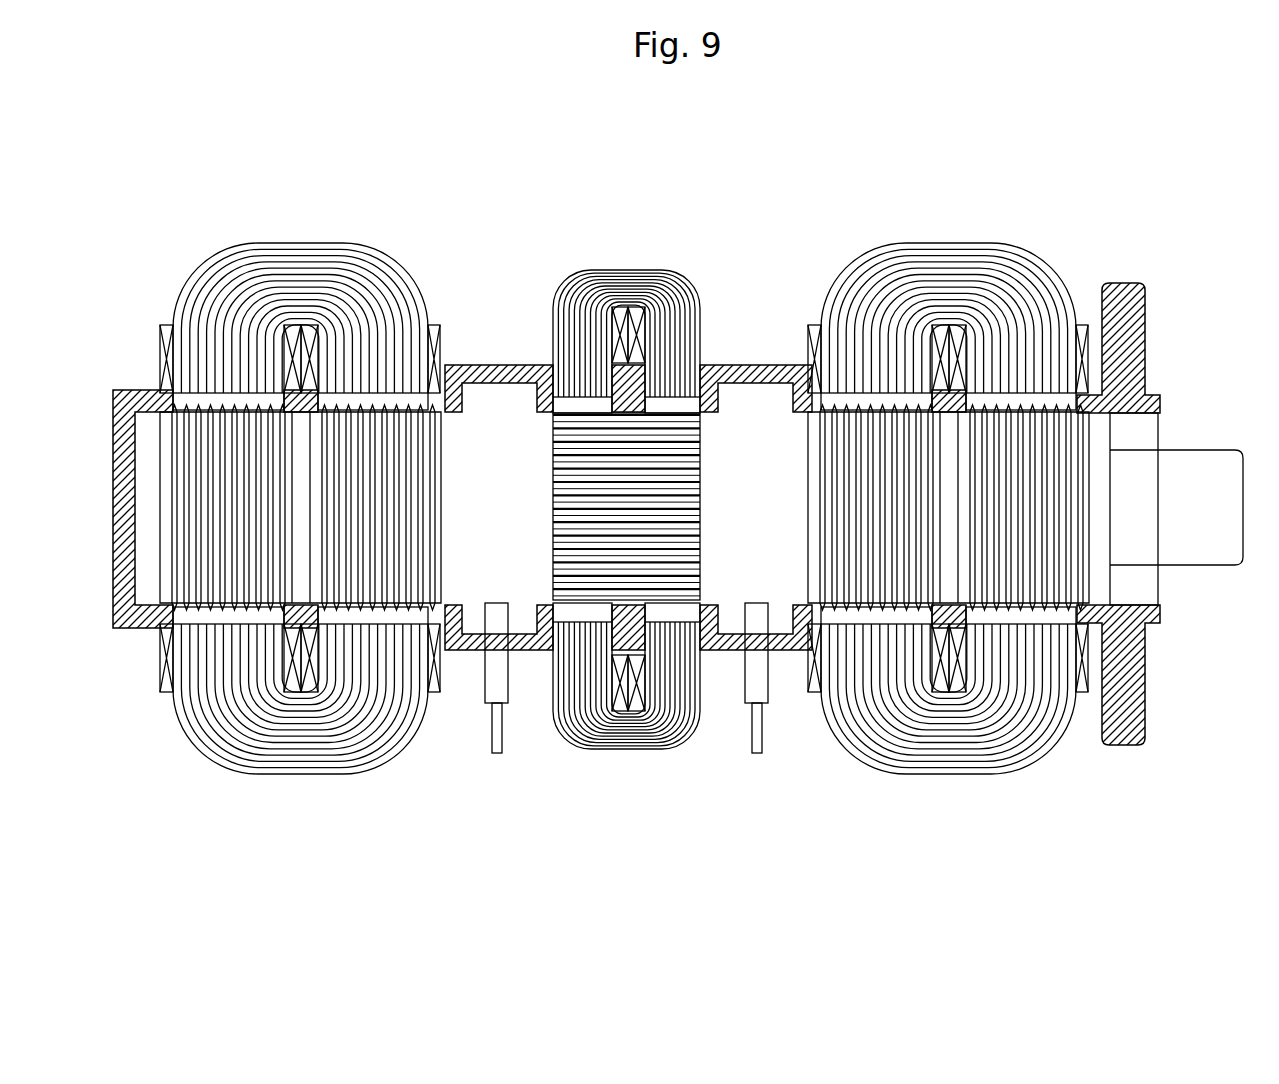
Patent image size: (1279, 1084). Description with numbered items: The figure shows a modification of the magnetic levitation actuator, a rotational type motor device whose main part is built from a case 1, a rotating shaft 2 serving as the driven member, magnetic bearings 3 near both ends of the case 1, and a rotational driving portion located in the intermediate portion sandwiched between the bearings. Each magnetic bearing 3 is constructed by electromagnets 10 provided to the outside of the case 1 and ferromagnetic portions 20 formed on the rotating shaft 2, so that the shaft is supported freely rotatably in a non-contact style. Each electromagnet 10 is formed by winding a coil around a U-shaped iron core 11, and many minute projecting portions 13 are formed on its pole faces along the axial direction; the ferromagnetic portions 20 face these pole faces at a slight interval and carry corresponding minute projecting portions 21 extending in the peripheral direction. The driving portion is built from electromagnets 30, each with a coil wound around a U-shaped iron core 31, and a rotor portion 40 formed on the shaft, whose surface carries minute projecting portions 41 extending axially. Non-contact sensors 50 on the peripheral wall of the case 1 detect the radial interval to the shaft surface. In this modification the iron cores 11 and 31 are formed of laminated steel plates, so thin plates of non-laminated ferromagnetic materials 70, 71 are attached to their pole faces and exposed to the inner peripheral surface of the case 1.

The case 1 is at (757, 362).
The rotating shaft 2 is at (1174, 450).
The magnetic bearing 3 is at (412, 253).
The electromagnet 10 is at (345, 241).
The iron core 11 is at (263, 246).
The projecting portion 13 is at (352, 408).
The ferromagnetic portion 20 is at (446, 469).
The projecting portion 21 is at (440, 550).
The electromagnet 30 is at (585, 268).
The iron core 31 is at (657, 265).
The rotor portion 40 is at (707, 459).
The projecting portion 41 is at (700, 498).
The non-contact sensor 50 is at (484, 698).
The non-laminated ferromagnetic material 70 is at (400, 400).
The non-laminated ferromagnetic material 71 is at (553, 405).